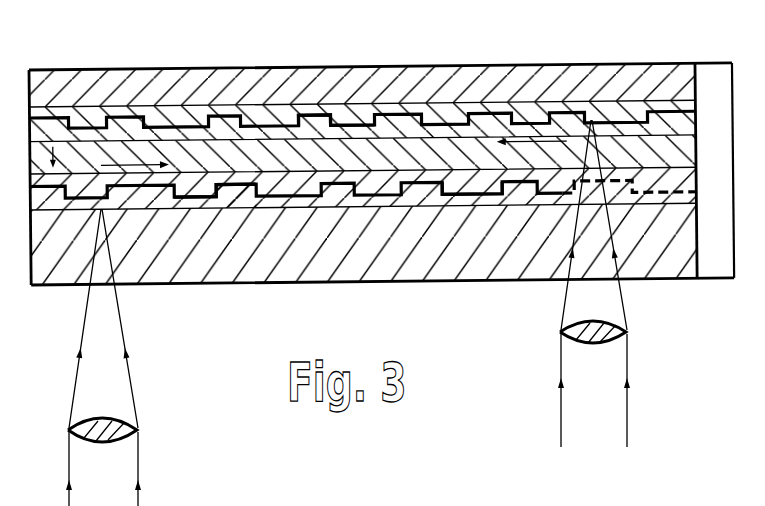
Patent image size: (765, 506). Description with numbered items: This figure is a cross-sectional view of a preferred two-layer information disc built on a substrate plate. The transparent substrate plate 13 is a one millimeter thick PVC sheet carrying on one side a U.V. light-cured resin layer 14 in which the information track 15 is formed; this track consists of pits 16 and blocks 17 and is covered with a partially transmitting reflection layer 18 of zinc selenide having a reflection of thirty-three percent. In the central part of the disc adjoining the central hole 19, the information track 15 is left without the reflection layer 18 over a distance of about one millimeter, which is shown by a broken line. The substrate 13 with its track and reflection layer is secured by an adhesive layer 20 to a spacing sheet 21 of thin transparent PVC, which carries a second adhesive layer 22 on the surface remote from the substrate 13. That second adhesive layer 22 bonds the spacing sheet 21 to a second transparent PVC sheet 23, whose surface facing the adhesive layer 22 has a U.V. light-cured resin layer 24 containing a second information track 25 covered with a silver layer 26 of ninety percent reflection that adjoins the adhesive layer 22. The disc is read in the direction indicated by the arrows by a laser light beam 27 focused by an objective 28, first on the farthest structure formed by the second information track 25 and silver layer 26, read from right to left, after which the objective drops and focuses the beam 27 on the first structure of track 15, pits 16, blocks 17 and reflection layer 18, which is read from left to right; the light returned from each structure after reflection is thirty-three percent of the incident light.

The transparent substrate plate 13 is at (680, 262).
The U.V. light-cured resin layer 14 is at (300, 200).
The information track 15 is at (393, 210).
The pits 16 is at (458, 197).
The blocks 17 is at (256, 200).
The partially transmitting reflection layer 18 is at (230, 187).
The central hole 19 is at (710, 90).
The adhesive layer 20 is at (162, 177).
The spacing sheet 21 is at (62, 150).
The second adhesive layer 22 is at (394, 127).
The second transparent PVC sheet 23 is at (157, 84).
The U.V. light-cured resin layer 24 is at (190, 113).
The second information track 25 is at (229, 103).
The silver layer 26 is at (342, 120).
The laser light beam 27 is at (140, 463).
The objective 28 is at (134, 420).